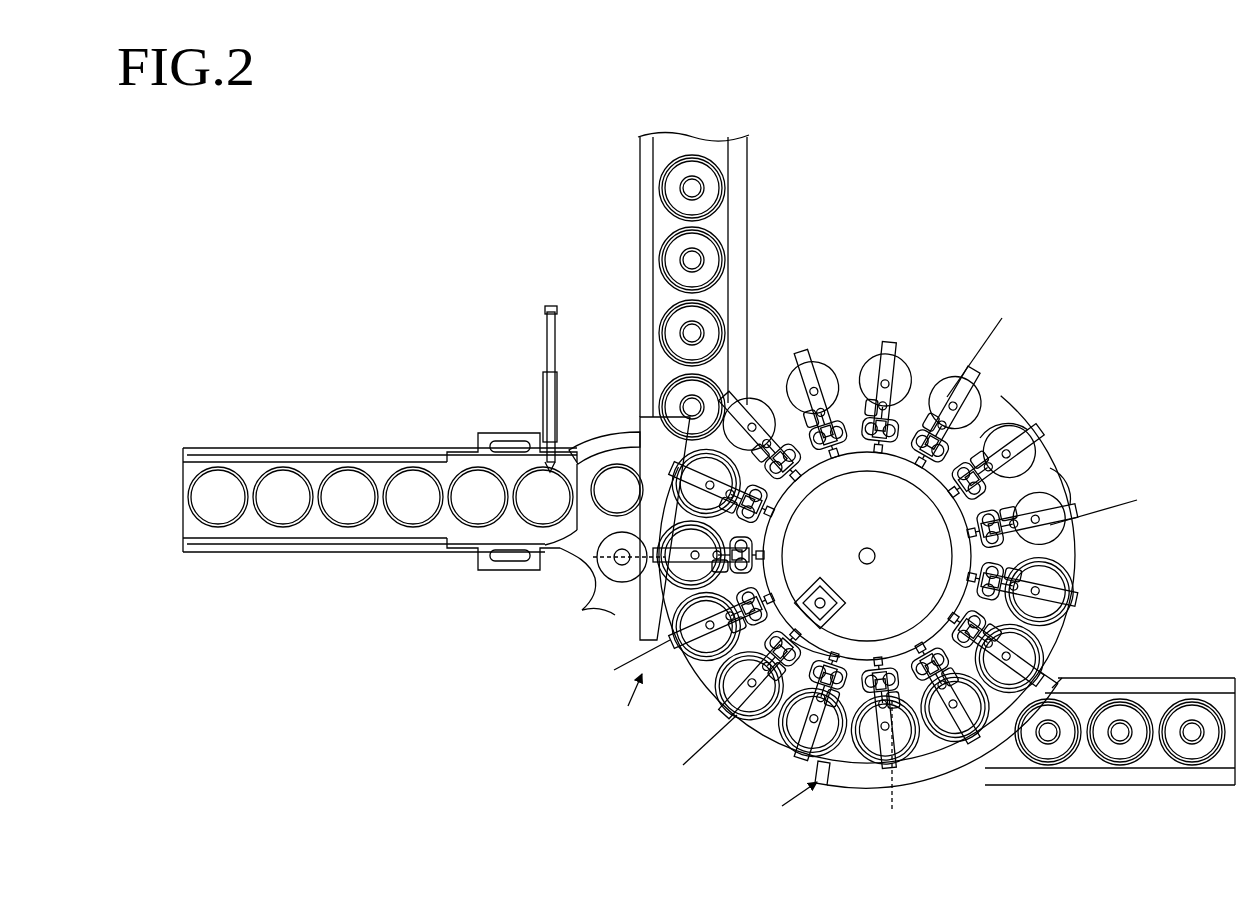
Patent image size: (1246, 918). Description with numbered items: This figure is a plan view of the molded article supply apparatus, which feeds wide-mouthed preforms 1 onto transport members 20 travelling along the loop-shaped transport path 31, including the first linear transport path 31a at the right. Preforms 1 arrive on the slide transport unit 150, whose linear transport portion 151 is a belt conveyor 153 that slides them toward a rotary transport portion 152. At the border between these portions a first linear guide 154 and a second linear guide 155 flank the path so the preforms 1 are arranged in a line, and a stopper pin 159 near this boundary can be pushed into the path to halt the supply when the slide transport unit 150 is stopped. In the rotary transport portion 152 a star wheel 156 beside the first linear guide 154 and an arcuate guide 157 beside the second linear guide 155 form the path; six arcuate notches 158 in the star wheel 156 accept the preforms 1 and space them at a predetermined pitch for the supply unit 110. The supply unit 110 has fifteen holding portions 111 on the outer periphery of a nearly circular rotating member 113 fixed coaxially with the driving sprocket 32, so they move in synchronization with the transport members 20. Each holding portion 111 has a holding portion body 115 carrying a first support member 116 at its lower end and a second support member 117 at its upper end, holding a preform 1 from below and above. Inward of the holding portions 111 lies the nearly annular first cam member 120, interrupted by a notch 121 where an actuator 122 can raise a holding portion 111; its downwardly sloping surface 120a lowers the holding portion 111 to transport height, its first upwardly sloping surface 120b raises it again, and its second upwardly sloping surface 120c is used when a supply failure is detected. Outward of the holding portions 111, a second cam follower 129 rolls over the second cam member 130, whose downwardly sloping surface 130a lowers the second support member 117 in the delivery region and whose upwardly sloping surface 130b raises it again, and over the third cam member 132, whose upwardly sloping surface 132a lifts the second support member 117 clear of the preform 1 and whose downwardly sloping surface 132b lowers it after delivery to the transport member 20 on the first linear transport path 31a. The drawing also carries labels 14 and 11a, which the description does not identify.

The wide-mouthed preform 1 is at (220, 488).
The belt conveyor 153 is at (316, 468).
The second linear guide 155 is at (490, 433).
The first linear guide 154 is at (527, 572).
The stopper pin 159 is at (548, 440).
The arcuate guide 157 is at (603, 442).
The arcuate notches 158 is at (575, 602).
The star wheel 156 is at (600, 612).
The linear transport portion 151 is at (414, 600).
The rotary transport portion 152 is at (478, 600).
The slide transport unit 150 is at (424, 500).
The transport path 31 is at (718, 217).
The first linear transport path 31a is at (1080, 762).
The transport member 20 is at (708, 258).
The second cam member 130 is at (648, 425).
The downwardly sloping surface 130a is at (649, 600).
The upwardly sloping surface 130b is at (660, 420).
The supply unit 110 is at (874, 551).
The first cam member 120 is at (866, 555).
The rotation axis 11a is at (836, 470).
The downwardly sloping surface 120a is at (790, 604).
The first upwardly sloping surface 120b is at (927, 490).
The second upwardly sloping surface 120c is at (860, 648).
The gripper 14 is at (913, 373).
The rotating member 113 is at (897, 695).
The driving sprocket 32 is at (868, 634).
The holding portion 111 is at (867, 490).
The holding portion body 115 is at (867, 347).
The first support member 116 is at (800, 370).
The second support member 117 is at (828, 380).
The second cam follower 129 is at (723, 398).
The notch 121 is at (700, 645).
The actuator 122 is at (775, 720).
The third cam member 132 is at (931, 751).
The upwardly sloping surface 132a is at (840, 770).
The downwardly sloping surface 132b is at (1026, 757).